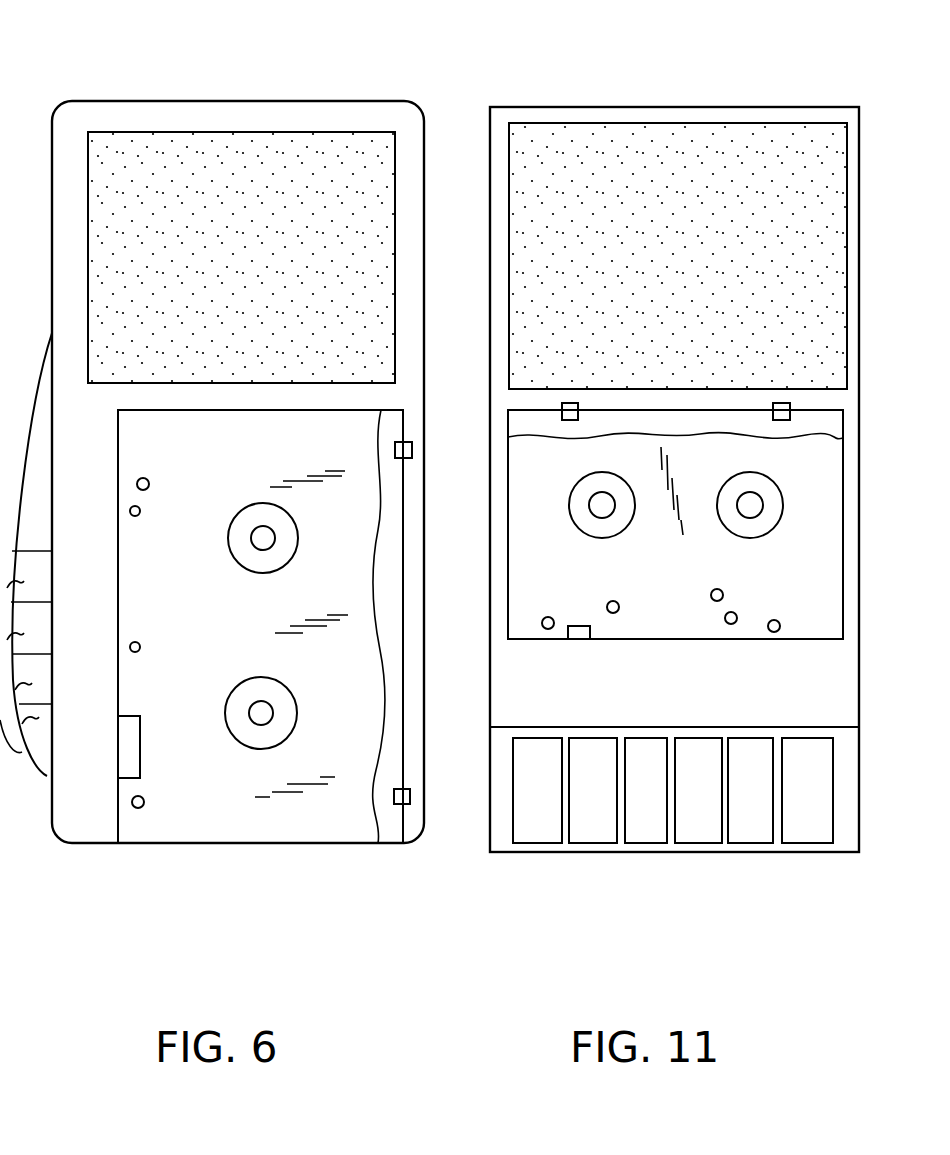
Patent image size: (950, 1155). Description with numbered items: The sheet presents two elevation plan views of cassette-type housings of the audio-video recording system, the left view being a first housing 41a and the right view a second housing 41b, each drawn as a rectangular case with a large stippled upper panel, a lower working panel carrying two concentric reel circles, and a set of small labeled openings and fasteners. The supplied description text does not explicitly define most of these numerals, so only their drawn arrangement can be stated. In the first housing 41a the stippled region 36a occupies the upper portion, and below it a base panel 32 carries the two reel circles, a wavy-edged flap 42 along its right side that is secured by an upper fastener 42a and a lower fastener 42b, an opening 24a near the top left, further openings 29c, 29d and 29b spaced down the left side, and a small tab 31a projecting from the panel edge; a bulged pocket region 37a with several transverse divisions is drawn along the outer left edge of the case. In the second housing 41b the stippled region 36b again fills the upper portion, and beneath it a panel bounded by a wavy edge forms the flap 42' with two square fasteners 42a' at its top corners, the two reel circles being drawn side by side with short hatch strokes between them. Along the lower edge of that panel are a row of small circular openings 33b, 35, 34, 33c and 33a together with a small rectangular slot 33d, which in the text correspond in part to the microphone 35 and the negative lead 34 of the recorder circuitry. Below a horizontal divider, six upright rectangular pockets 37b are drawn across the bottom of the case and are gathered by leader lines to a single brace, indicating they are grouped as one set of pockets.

In FIG. 6, the first embodiment of the carrying case/organizer 41a is at (200, 88).
In FIG. 6, the textured panel 36a is at (292, 158).
In FIG. 6, the base panel 32 is at (273, 818).
In FIG. 6, the flap 42 is at (421, 626).
In FIG. 6, the upper fastener 42a is at (441, 451).
In FIG. 6, the lower fastener 42b is at (398, 805).
In FIG. 6, the opening 24a is at (147, 479).
In FIG. 6, the opening 29c is at (140, 508).
In FIG. 6, the opening 29d is at (140, 644).
In FIG. 6, the tab 31a is at (130, 750).
In FIG. 6, the opening 29b is at (144, 801).
In FIG. 6, the side pockets 37a is at (0, 650).
In FIG. 11, the second embodiment of the carrying case/organizer 41b is at (617, 88).
In FIG. 11, the textured panel 36b is at (713, 148).
In FIG. 11, the flap 42' is at (675, 524).
In FIG. 11, the fasteners 42a' is at (688, 381).
In FIG. 11, the opening 33b is at (580, 585).
In FIG. 11, the microphone 35 is at (575, 625).
In FIG. 11, the slot 33d is at (613, 613).
In FIG. 11, the negative lead 34 is at (722, 591).
In FIG. 11, the opening 33c is at (729, 624).
In FIG. 11, the opening 33a is at (774, 632).
In FIG. 11, the pockets 37b is at (547, 832).